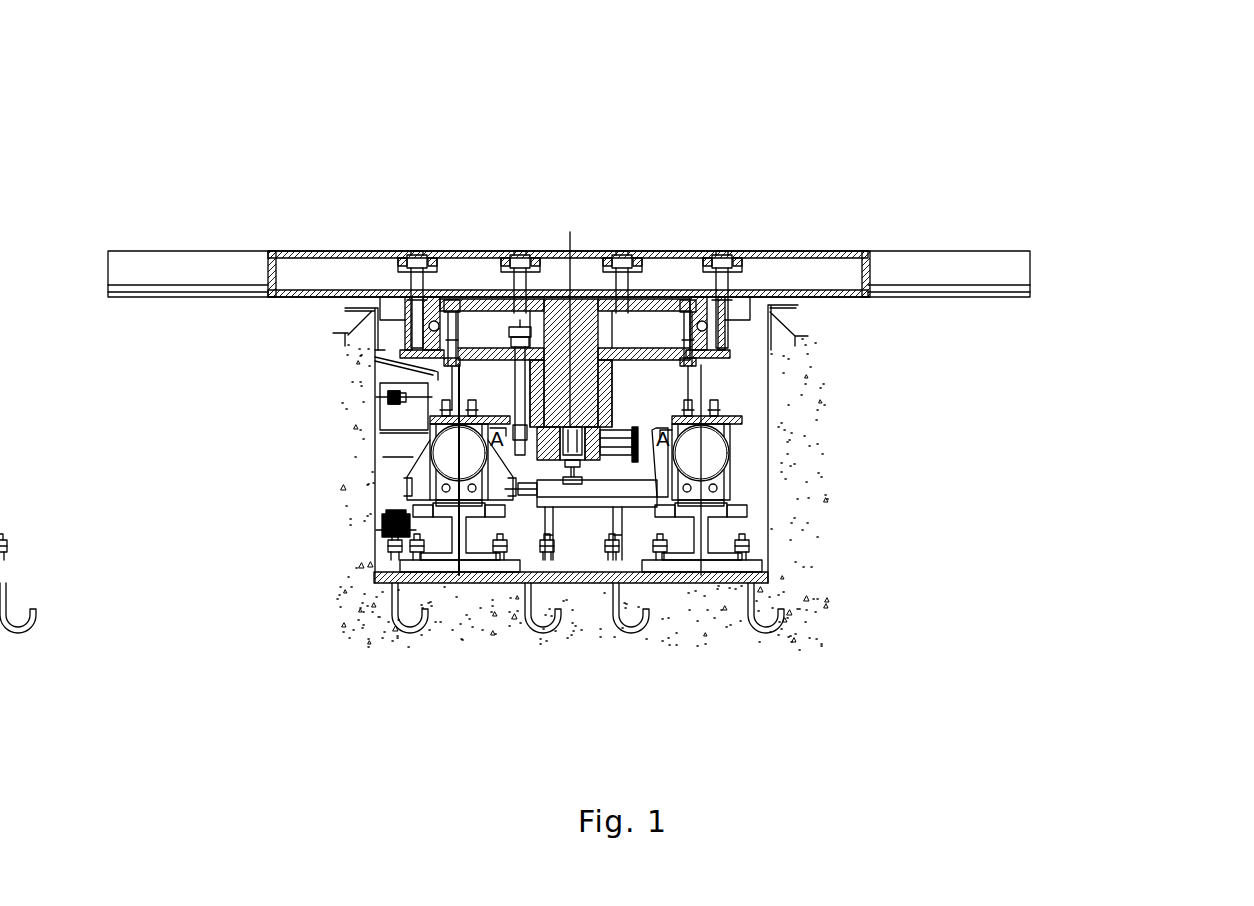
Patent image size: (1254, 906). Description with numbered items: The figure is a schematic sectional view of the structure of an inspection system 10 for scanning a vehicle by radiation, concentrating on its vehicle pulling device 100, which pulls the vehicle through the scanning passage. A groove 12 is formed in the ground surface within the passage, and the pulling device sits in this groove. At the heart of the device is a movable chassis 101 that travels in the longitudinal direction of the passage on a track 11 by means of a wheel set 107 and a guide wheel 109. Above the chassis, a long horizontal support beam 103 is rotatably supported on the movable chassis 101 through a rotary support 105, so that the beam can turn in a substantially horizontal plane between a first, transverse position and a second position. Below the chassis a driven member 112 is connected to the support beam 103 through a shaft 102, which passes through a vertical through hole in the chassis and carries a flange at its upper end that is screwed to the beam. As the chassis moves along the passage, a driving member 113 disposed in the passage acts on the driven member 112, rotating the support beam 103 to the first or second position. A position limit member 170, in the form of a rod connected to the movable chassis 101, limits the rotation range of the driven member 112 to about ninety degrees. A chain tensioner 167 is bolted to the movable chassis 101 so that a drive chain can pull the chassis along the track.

The inspection system 10 is at (1097, 103).
The vehicle pulling device 100 is at (927, 170).
The movable chassis 101 is at (677, 320).
The shaft 102 is at (583, 313).
The support beam 103 is at (353, 278).
The rotary support 105 is at (424, 304).
The wheel set 107 is at (703, 448).
The guide wheel 109 is at (420, 514).
The track 11 is at (462, 522).
The driven member 112 is at (590, 440).
The driving member 113 is at (637, 460).
The groove 12 is at (768, 434).
The chain tensioner 167 is at (402, 408).
The position limit member 170 is at (511, 340).